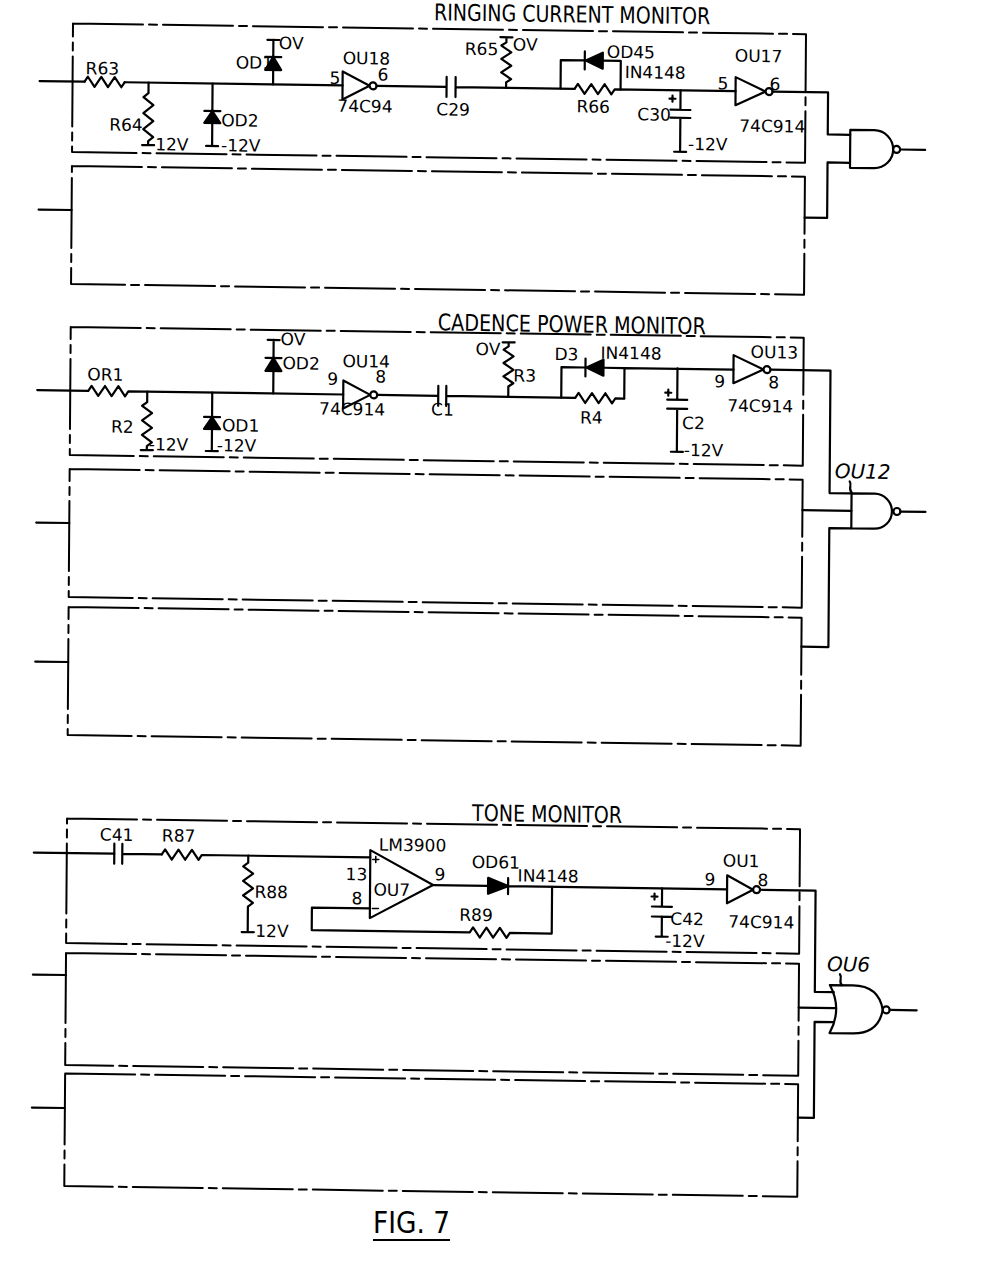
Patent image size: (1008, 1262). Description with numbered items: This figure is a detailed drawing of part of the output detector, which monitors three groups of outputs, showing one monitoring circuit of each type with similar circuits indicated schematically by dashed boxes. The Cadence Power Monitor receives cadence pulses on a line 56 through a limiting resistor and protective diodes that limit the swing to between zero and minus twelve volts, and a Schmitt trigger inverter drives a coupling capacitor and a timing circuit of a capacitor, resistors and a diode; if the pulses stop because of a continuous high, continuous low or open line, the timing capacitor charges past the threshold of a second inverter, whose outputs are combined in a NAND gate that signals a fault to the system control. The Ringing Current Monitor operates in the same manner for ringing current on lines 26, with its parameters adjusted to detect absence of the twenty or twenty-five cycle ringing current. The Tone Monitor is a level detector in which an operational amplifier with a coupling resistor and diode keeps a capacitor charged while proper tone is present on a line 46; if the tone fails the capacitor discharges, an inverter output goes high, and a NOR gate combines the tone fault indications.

The ringing current line 26 is at (56, 80).
The power cadence output line 56 is at (56, 389).
The tone line 46 is at (46, 851).